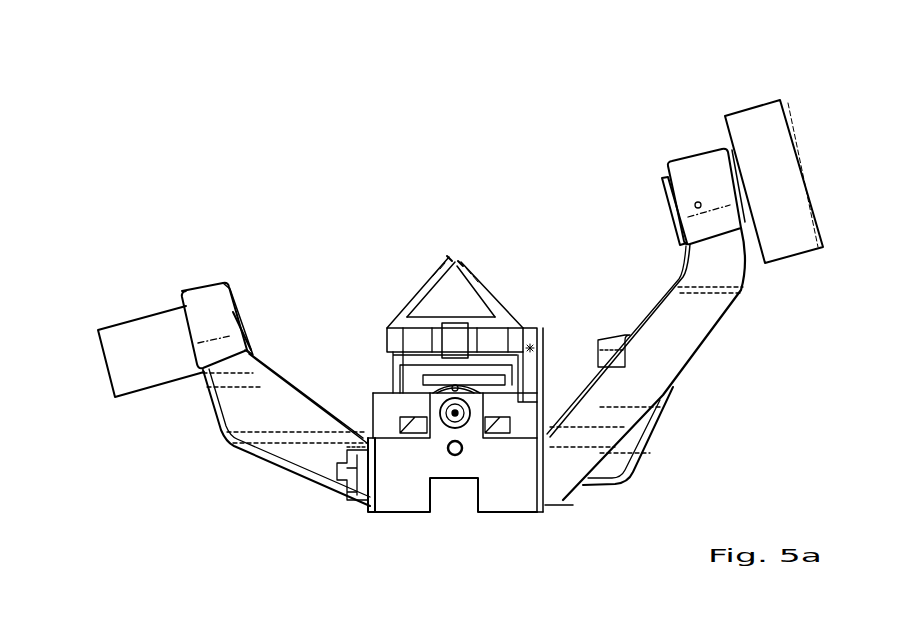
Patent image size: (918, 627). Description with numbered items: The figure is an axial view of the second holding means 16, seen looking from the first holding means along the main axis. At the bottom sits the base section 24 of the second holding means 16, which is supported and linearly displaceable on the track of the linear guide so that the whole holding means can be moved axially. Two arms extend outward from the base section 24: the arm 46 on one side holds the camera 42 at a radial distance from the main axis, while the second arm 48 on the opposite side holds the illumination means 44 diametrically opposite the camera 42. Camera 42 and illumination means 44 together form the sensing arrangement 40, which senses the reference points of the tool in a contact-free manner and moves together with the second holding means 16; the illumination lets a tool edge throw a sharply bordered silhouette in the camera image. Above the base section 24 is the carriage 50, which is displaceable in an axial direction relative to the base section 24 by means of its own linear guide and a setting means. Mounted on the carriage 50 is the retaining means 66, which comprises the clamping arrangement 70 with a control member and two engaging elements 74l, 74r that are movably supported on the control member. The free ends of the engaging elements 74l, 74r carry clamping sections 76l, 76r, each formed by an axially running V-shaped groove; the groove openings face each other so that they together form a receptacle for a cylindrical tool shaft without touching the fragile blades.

The second holding means 16 is at (274, 146).
The base section 24 is at (497, 497).
The sensing arrangement 40 is at (781, 92).
The camera 42 is at (660, 172).
The illumination means 44 is at (244, 312).
The arm 46 is at (702, 340).
The second arm 48 is at (235, 421).
The carriage 50 is at (385, 410).
The retaining means 66 is at (388, 312).
The clamping arrangement 70 is at (533, 328).
The engaging element 74r is at (418, 295).
The engaging element 74l is at (500, 295).
The clamping section 76r is at (452, 257).
The clamping section 76l is at (460, 262).